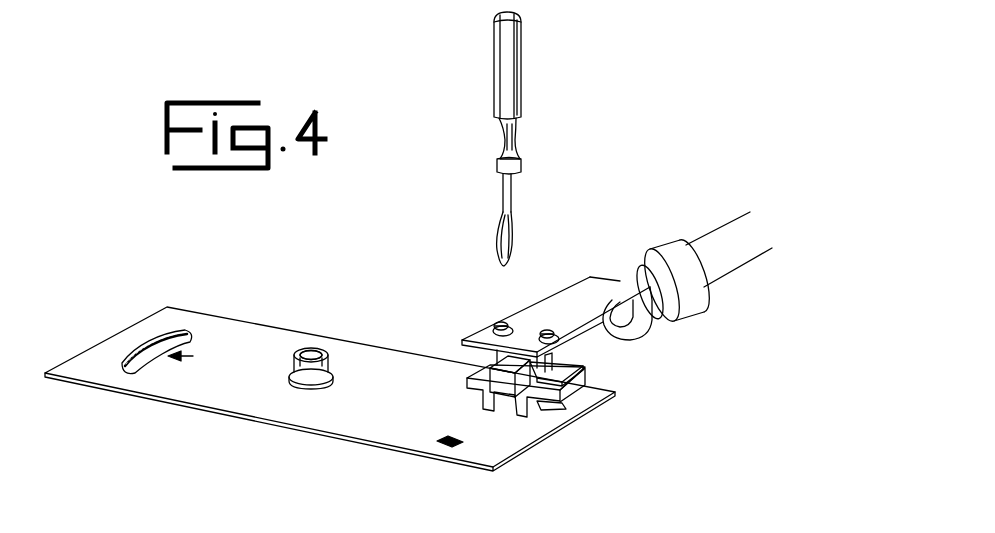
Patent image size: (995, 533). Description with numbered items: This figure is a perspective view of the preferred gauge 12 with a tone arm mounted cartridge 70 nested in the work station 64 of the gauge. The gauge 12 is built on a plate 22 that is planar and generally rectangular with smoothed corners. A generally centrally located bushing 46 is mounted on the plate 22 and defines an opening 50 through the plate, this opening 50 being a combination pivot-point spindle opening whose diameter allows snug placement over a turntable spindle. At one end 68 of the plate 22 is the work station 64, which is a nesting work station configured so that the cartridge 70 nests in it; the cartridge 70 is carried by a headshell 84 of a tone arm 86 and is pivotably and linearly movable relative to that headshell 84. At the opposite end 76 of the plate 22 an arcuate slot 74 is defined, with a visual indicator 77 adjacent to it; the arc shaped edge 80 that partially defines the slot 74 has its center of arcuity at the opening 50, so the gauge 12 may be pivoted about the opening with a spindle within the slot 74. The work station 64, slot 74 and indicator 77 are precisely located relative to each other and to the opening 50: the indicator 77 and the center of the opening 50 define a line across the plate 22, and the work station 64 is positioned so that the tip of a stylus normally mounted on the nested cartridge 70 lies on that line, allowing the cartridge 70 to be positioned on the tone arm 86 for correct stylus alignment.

The gauge 12 is at (238, 400).
The plate 22 is at (407, 412).
The bushing 46 is at (322, 351).
The opening 50 is at (310, 350).
The work station 64 is at (580, 370).
The end of the plate 68 is at (523, 433).
The cartridge 70 is at (480, 373).
The arcuate slot 74 is at (193, 332).
The end of the plate 76 is at (137, 340).
The visual indicator 77 is at (177, 356).
The arc shaped edge 80 is at (197, 347).
The headshell 84 is at (580, 298).
The tone arm 86 is at (727, 240).